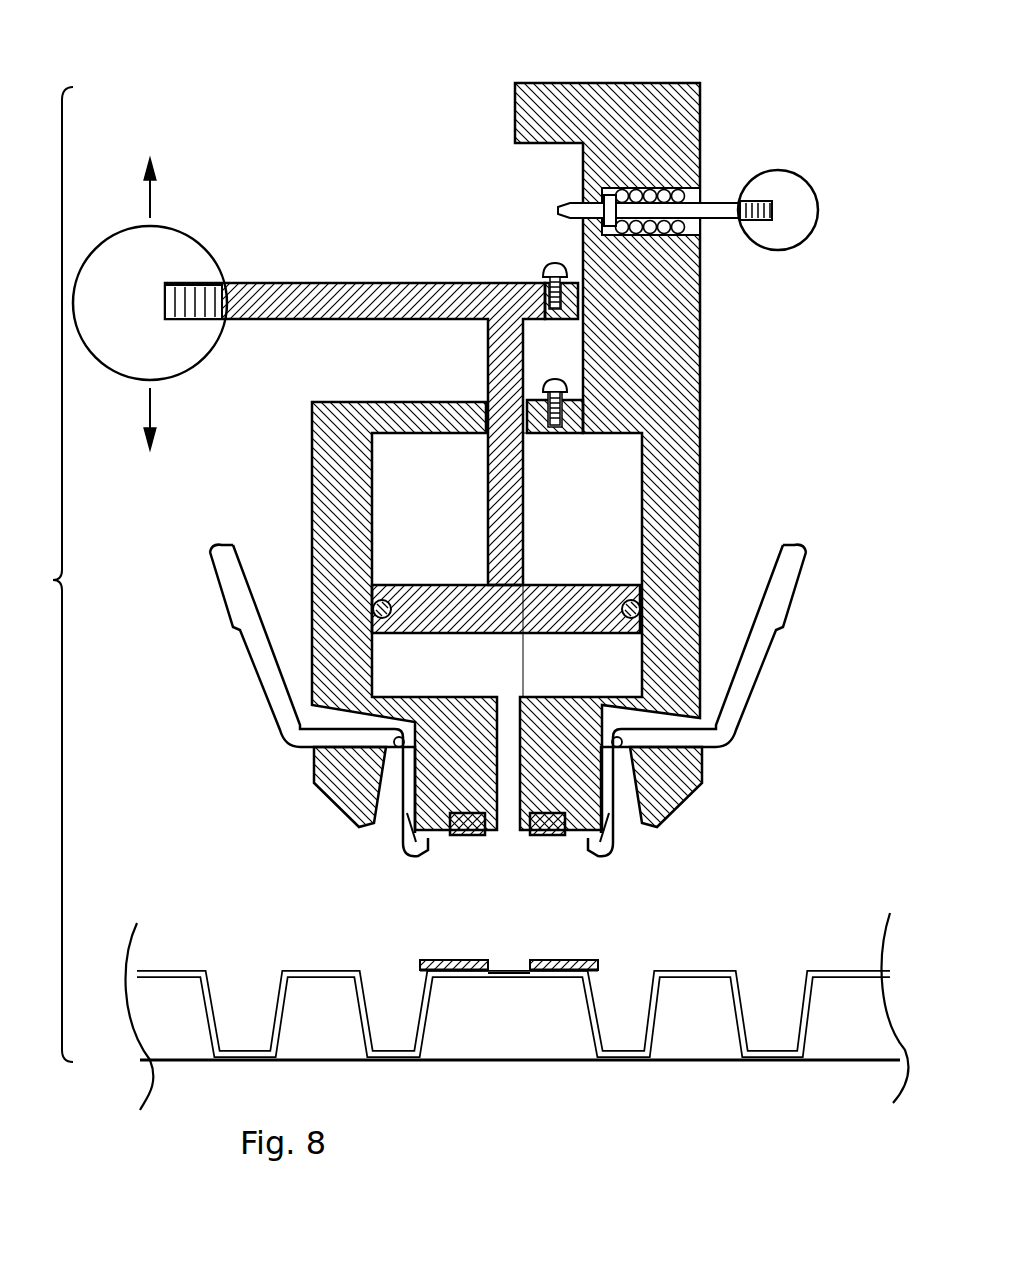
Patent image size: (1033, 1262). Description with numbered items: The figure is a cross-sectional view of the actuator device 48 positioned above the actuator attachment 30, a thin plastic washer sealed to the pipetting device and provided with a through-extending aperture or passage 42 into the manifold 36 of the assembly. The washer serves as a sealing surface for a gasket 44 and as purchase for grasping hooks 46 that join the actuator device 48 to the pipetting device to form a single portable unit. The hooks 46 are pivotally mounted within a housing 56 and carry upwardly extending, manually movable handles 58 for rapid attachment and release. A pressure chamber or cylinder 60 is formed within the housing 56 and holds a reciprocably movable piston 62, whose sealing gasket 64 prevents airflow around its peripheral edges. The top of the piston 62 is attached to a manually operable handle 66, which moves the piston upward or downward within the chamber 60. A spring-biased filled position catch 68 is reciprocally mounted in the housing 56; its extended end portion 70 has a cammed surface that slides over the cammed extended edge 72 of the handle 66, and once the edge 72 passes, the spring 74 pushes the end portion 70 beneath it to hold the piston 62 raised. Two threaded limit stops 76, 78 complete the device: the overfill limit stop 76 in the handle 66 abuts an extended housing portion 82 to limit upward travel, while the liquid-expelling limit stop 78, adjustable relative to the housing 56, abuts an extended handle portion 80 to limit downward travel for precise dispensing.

The actuator attachment 30 is at (552, 960).
The manifold 36 is at (718, 962).
The aperture or passage 42 is at (507, 980).
The gasket 44 is at (548, 840).
The grasping hooks 46 is at (405, 817).
The actuator device 48 is at (705, 450).
The housing 56 is at (703, 528).
The handles 58 is at (767, 596).
The pressure chamber or cylinder 60 is at (598, 535).
The piston 62 is at (447, 585).
The sealing gasket 64 is at (385, 606).
The handle 66 is at (195, 240).
The filled position catch 68 is at (799, 175).
The extended end portion 70 is at (560, 210).
The extended edge 72 is at (578, 290).
The spring 74 is at (663, 190).
The limit stop 76 is at (545, 268).
The limit stop 78 is at (562, 388).
The extended handle portion 80 is at (548, 318).
The extended housing portion 82 is at (515, 120).